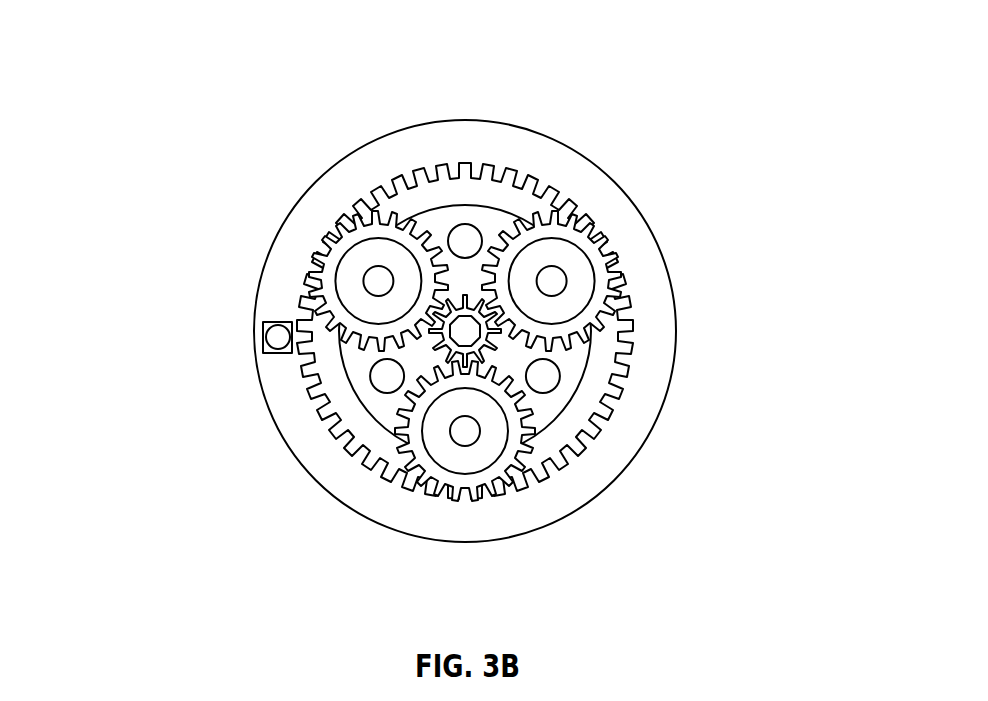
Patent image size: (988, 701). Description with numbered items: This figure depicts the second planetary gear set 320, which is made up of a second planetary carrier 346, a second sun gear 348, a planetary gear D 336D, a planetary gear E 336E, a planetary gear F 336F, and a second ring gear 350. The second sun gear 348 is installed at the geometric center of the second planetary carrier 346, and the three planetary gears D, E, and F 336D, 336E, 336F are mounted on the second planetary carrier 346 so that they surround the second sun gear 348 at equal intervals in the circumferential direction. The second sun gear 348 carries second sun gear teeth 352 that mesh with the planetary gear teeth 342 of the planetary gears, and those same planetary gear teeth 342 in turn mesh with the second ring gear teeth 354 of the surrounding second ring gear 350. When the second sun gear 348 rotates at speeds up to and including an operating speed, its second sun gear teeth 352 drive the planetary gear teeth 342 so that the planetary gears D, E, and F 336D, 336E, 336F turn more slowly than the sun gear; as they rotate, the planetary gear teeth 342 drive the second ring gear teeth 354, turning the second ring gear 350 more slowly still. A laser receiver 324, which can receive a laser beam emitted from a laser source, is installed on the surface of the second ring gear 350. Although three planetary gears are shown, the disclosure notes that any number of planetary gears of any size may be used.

The second planetary gear set 320 is at (472, 326).
The laser receiver 324 is at (161, 306).
The planetary gear D 336D is at (243, 327).
The planetary gear E 336E is at (551, 238).
The planetary gear F 336F is at (495, 443).
The planetary gear teeth 342 is at (337, 345).
The second planetary carrier 346 is at (465, 224).
The second sun gear 348 is at (438, 269).
The second ring gear 350 is at (468, 346).
The second sun gear teeth 352 is at (630, 381).
The second ring gear teeth 354 is at (290, 517).